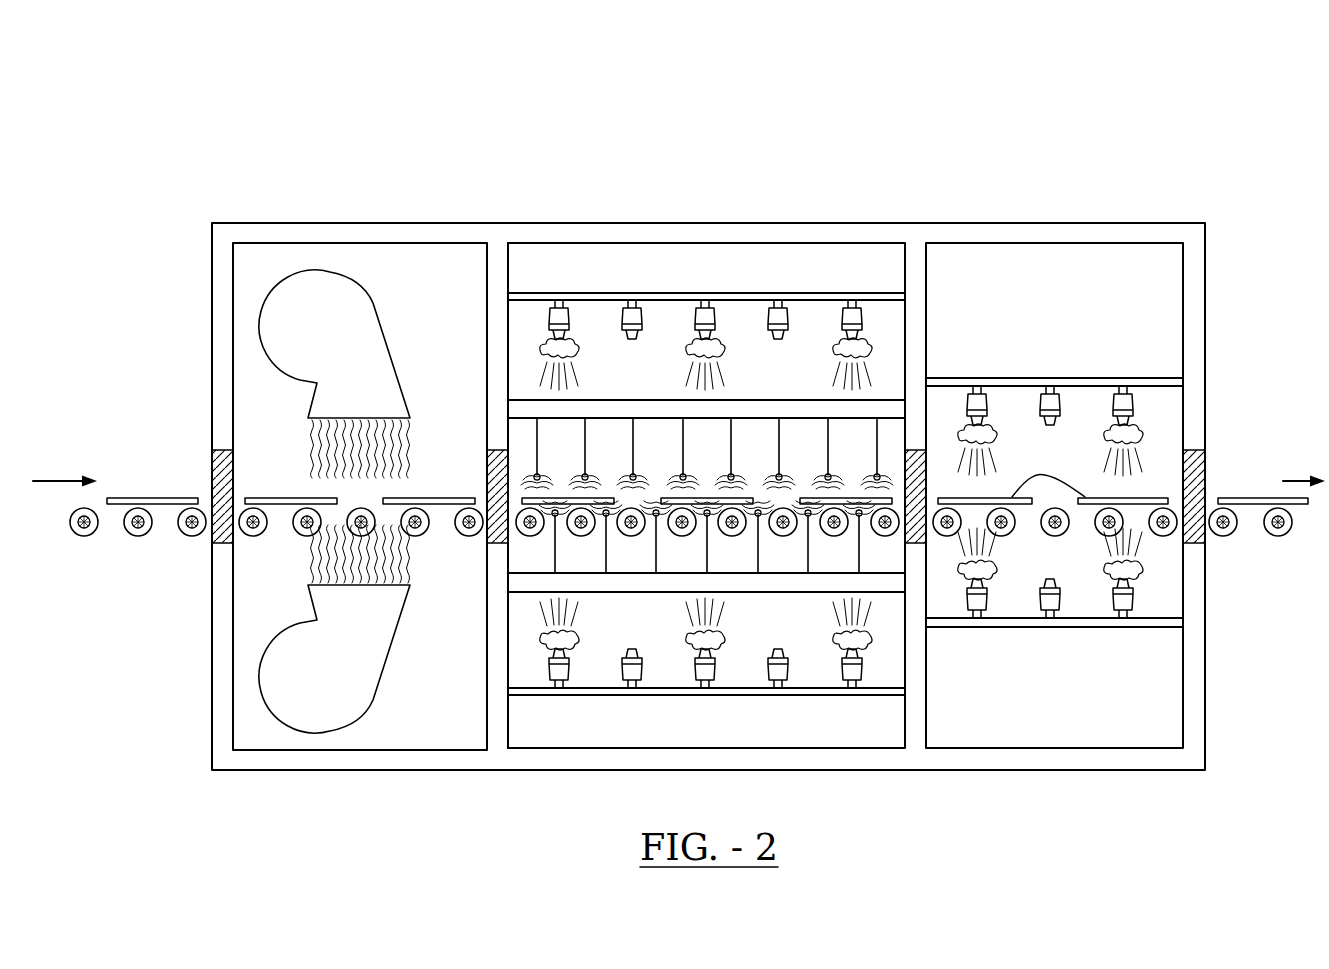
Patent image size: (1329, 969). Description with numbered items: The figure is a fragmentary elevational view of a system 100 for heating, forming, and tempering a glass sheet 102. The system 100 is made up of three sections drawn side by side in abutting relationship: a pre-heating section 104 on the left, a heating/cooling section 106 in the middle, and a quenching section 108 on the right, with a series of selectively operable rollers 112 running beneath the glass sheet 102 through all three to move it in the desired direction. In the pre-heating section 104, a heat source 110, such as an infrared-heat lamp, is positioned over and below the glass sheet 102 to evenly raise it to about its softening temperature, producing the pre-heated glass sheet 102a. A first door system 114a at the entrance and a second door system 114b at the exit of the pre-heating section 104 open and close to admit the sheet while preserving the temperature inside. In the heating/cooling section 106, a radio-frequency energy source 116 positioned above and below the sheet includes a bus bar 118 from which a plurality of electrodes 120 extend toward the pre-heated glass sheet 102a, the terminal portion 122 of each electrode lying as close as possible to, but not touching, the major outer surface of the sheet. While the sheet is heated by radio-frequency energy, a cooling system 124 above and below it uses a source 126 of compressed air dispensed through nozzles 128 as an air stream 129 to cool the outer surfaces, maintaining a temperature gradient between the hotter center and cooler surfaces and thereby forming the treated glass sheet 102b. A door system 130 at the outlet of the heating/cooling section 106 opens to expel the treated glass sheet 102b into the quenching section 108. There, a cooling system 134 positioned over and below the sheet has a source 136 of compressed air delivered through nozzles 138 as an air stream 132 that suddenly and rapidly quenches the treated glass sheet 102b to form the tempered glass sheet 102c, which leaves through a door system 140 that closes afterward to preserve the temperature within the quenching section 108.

The system 100 is at (610, 95).
The glass sheet 102 is at (157, 497).
The pre-heated glass sheet 102a is at (857, 497).
The treated glass sheet 102b is at (1053, 474).
The tempered glass sheet 102c is at (1246, 497).
The pre-heating section 104 is at (362, 258).
The heating/cooling section 106 is at (657, 252).
The quenching section 108 is at (1108, 255).
The heat source 110 is at (378, 302).
The rollers 112 is at (88, 538).
The first door system 114a is at (208, 535).
The second door system 114b is at (484, 537).
The radio-frequency energy source 116 is at (504, 410).
The bus bar 118 is at (860, 405).
The electrodes 120 is at (657, 545).
The terminal portion 122 is at (693, 548).
The cooling system 124 is at (710, 275).
The source of compressed air 126 is at (796, 300).
The nozzle 128 is at (623, 348).
The air stream 129 is at (722, 362).
The door system 130 is at (915, 545).
The air stream 132 is at (1112, 567).
The cooling system 134 is at (1050, 318).
The source of compressed air 136 is at (985, 385).
The nozzle 138 is at (1062, 430).
The door system 140 is at (1207, 540).